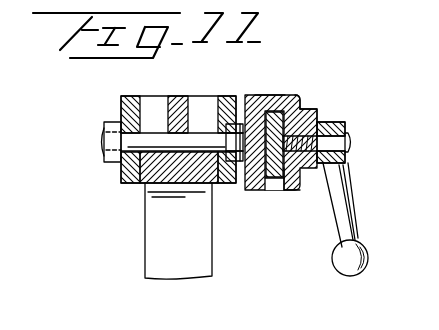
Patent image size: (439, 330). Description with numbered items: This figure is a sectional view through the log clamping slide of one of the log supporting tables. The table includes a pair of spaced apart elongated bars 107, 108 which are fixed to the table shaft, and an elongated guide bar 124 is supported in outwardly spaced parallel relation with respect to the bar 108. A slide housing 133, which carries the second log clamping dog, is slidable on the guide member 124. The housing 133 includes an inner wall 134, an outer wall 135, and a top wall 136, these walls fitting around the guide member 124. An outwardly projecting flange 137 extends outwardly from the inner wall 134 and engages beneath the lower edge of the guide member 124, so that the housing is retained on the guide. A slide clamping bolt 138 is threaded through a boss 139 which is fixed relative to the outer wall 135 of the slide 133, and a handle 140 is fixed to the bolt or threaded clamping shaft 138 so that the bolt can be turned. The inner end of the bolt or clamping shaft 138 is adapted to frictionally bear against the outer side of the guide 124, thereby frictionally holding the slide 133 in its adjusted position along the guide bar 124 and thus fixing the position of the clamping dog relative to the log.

The elongated bar 107 is at (121, 105).
The elongated bar 108 is at (236, 96).
The guide bar 124 is at (265, 93).
The slide housing 133 is at (282, 92).
The inner wall 134 is at (247, 193).
The outer wall 135 is at (300, 195).
The top wall 136 is at (298, 93).
The outwardly projecting flange 137 is at (278, 195).
The slide clamping bolt 138 is at (348, 138).
The boss 139 is at (318, 112).
The handle 140 is at (353, 207).